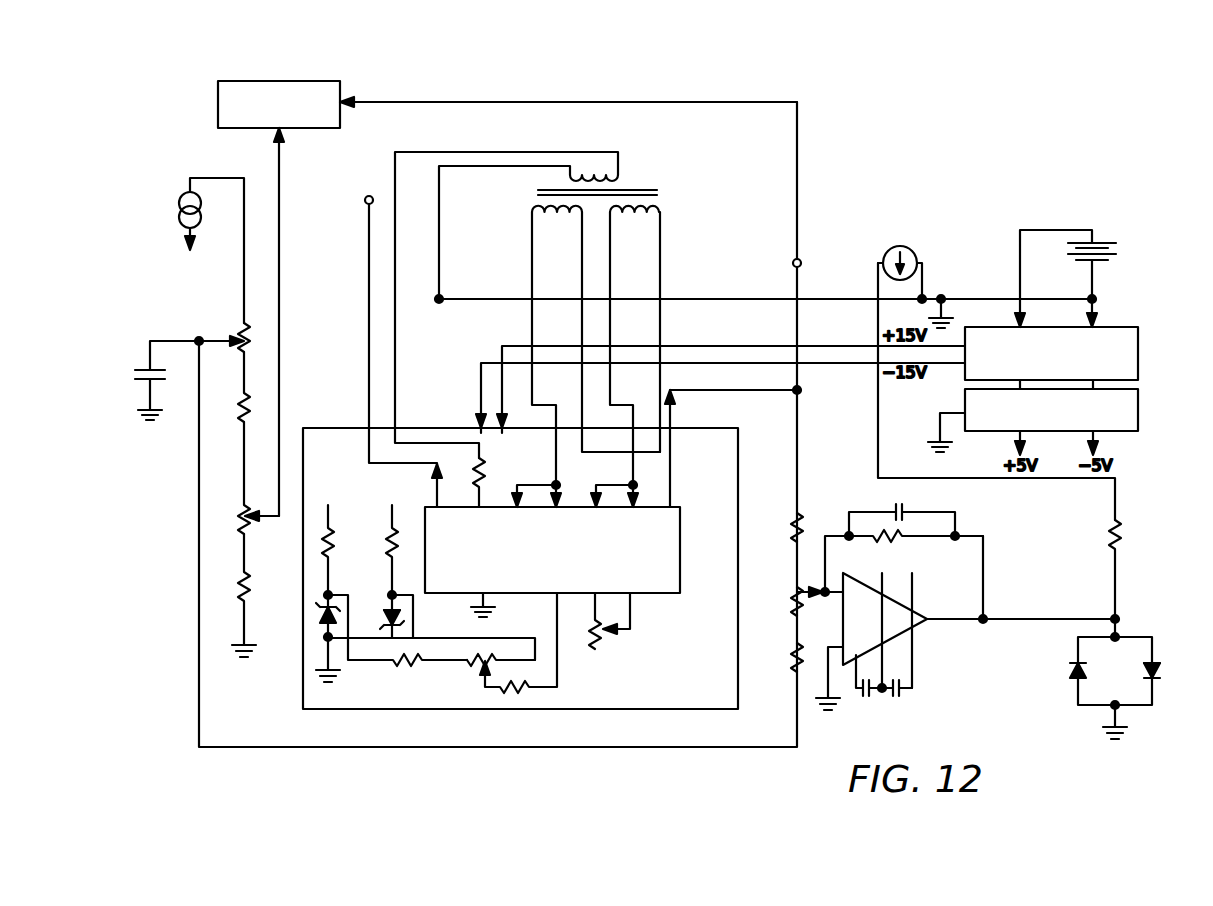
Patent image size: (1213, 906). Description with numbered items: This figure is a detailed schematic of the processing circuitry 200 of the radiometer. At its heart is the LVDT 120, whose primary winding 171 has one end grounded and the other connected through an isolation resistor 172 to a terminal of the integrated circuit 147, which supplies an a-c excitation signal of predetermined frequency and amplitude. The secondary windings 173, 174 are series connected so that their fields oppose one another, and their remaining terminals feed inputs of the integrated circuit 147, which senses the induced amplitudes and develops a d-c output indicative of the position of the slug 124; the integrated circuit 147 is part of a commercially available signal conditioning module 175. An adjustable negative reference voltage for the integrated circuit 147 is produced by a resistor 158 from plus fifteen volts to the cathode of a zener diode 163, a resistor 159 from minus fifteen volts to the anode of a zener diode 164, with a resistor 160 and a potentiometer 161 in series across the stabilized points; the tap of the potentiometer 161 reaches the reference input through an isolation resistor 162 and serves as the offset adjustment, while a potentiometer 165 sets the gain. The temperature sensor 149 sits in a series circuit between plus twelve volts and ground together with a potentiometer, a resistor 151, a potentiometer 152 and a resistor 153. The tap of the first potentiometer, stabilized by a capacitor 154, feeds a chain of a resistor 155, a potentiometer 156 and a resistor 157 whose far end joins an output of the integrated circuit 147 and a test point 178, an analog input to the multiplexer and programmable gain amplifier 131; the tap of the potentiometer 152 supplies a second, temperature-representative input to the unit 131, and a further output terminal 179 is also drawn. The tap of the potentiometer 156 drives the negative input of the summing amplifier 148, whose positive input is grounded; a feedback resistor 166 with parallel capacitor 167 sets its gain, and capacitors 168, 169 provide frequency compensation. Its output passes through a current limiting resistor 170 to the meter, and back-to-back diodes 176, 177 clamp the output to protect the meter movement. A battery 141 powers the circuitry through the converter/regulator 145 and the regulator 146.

The multiplexer and programmable gain amplifier 131 is at (296, 114).
The processing circuitry 200 is at (168, 527).
The temperature sensor 149 is at (182, 199).
The capacitor 154 is at (144, 362).
The resistor 151 is at (242, 398).
The potentiometer 152 is at (242, 516).
The resistor 153 is at (250, 583).
The output terminal 179 is at (366, 200).
The LVDT 120 is at (529, 192).
The primary winding 171 is at (618, 172).
The slug 124 is at (666, 199).
The secondary winding 173 is at (531, 216).
The secondary winding 174 is at (659, 212).
The test point 178 is at (801, 262).
The battery 141 is at (1098, 242).
The converter/regulator 145 is at (1109, 327).
The regulator 146 is at (1138, 412).
The signal conditioning module 175 is at (340, 428).
The isolation resistor 172 is at (485, 474).
The integrated circuit 147 is at (649, 595).
The resistor 158 is at (330, 533).
The resistor 159 is at (389, 548).
The zener diode 163 is at (320, 617).
The zener diode 164 is at (403, 615).
The resistor 160 is at (407, 668).
The potentiometer 161 is at (477, 657).
The isolation resistor 162 is at (533, 690).
The potentiometer 165 is at (600, 645).
The resistor 157 is at (789, 520).
The potentiometer 156 is at (789, 599).
The resistor 155 is at (789, 657).
The summing amplifier 148 is at (920, 628).
The resistor 166 is at (890, 528).
The capacitor 167 is at (905, 511).
The capacitor 168 is at (869, 698).
The capacitor 169 is at (902, 697).
The current limiting resistor 170 is at (1124, 536).
The diode 176 is at (1069, 672).
The diode 177 is at (1154, 664).